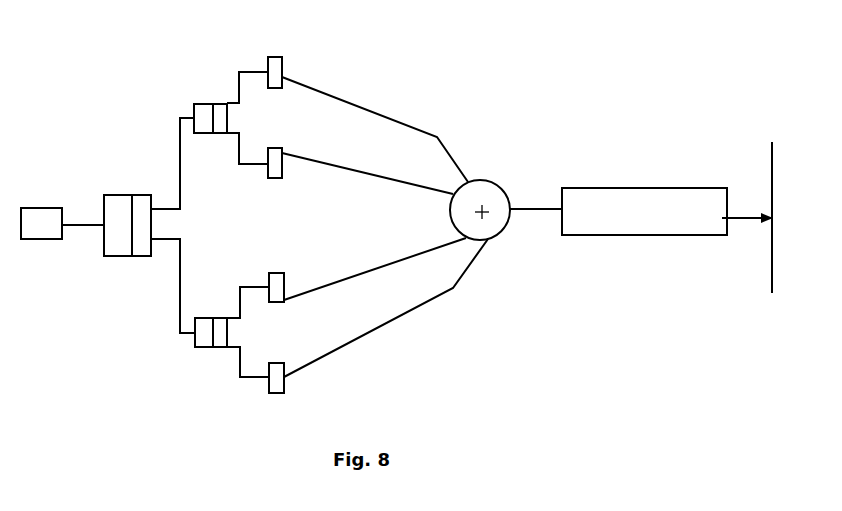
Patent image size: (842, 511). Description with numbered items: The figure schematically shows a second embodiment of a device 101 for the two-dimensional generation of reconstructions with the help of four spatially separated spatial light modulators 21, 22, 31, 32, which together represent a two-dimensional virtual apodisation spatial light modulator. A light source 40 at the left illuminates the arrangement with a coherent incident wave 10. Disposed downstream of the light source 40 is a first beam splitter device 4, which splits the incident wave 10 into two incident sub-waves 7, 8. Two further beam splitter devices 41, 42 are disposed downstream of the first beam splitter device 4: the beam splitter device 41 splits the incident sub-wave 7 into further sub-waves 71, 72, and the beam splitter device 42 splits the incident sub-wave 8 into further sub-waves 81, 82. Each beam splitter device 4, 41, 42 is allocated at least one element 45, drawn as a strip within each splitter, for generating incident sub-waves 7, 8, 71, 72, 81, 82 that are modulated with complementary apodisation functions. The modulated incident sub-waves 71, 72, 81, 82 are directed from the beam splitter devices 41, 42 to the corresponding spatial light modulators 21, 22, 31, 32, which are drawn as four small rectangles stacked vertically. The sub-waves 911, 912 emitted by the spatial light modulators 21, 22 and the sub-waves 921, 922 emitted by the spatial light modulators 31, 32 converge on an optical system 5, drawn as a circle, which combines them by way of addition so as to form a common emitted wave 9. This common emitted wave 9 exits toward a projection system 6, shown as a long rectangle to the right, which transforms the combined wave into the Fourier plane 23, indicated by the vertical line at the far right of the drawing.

The device 101 is at (647, 95).
The light source 40 is at (42, 228).
The coherent incident wave 10 is at (83, 214).
The first beam splitter device 4 is at (122, 207).
The element 45 is at (143, 253).
The incident sub-wave 7 is at (172, 163).
The incident sub-wave 8 is at (173, 286).
The beam splitter device 41 is at (209, 138).
The beam splitter device 42 is at (211, 319).
The sub-wave 71 is at (240, 67).
The sub-wave 72 is at (242, 168).
The sub-wave 81 is at (244, 283).
The sub-wave 82 is at (244, 382).
The spatial light modulator 21 is at (279, 59).
The spatial light modulator 22 is at (279, 179).
The spatial light modulator 31 is at (279, 272).
The spatial light modulator 32 is at (279, 392).
The emitted sub-wave 911 is at (370, 110).
The emitted sub-wave 912 is at (367, 182).
The emitted sub-wave 921 is at (375, 269).
The emitted sub-wave 922 is at (353, 343).
The optical system 5 is at (482, 190).
The common emitted wave 9 is at (532, 205).
The projection system 6 is at (667, 211).
The Fourier plane 23 is at (784, 204).